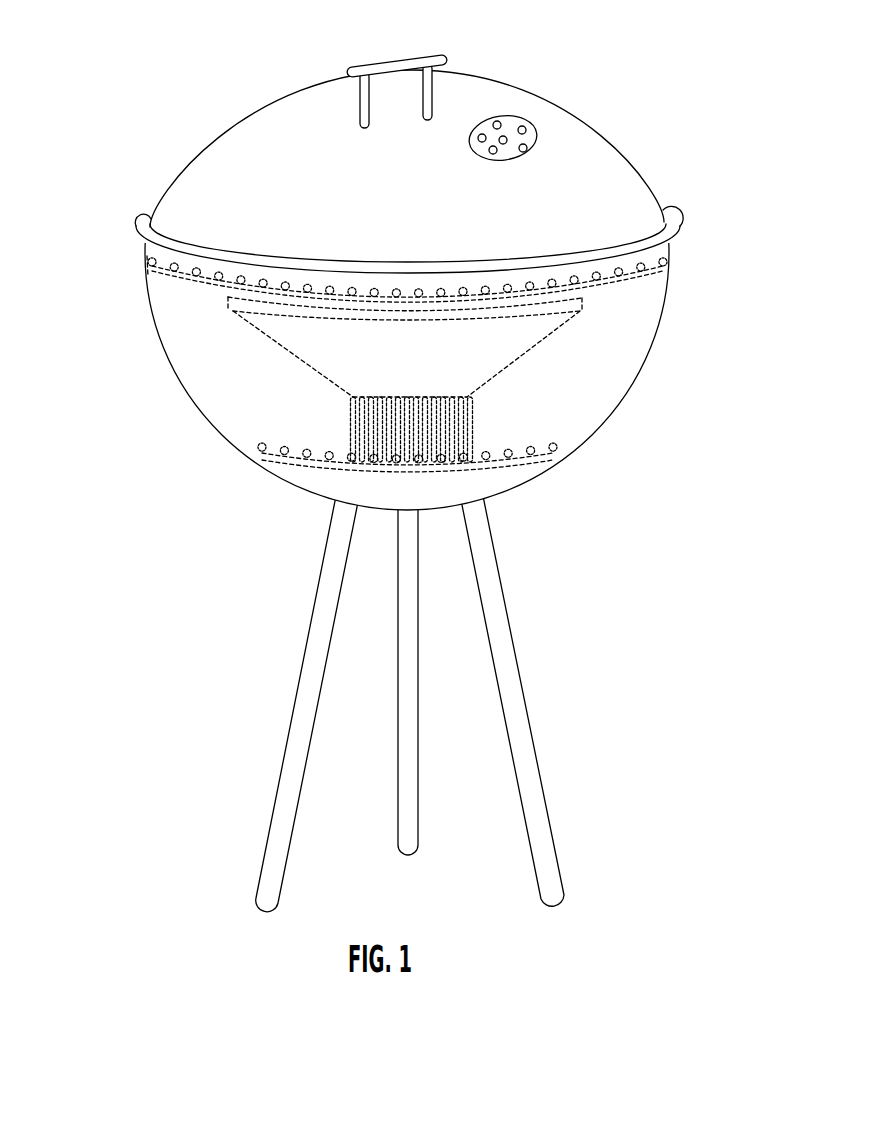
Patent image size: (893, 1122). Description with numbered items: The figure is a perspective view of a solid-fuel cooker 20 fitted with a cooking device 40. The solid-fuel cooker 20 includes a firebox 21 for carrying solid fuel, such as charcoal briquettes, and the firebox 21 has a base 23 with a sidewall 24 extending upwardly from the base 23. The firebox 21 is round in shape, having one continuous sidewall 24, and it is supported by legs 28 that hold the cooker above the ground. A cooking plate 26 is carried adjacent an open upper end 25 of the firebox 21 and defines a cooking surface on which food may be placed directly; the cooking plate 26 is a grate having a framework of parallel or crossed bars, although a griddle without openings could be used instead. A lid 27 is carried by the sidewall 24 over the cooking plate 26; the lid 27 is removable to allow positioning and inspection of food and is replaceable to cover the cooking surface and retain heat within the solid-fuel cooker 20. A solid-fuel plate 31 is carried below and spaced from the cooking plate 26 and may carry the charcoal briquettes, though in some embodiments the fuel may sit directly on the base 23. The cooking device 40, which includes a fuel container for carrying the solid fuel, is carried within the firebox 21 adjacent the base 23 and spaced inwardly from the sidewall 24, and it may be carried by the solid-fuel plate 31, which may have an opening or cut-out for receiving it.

The solid-fuel cooker 20 is at (158, 108).
The firebox 21 is at (162, 358).
The base 23 is at (453, 505).
The sidewall 24 is at (150, 308).
The open upper end 25 is at (685, 238).
The cooking plate 26 is at (632, 255).
The lid 27 is at (170, 183).
The legs 28 is at (302, 652).
The solid-fuel plate 31 is at (262, 452).
The cooking device 40 is at (540, 360).